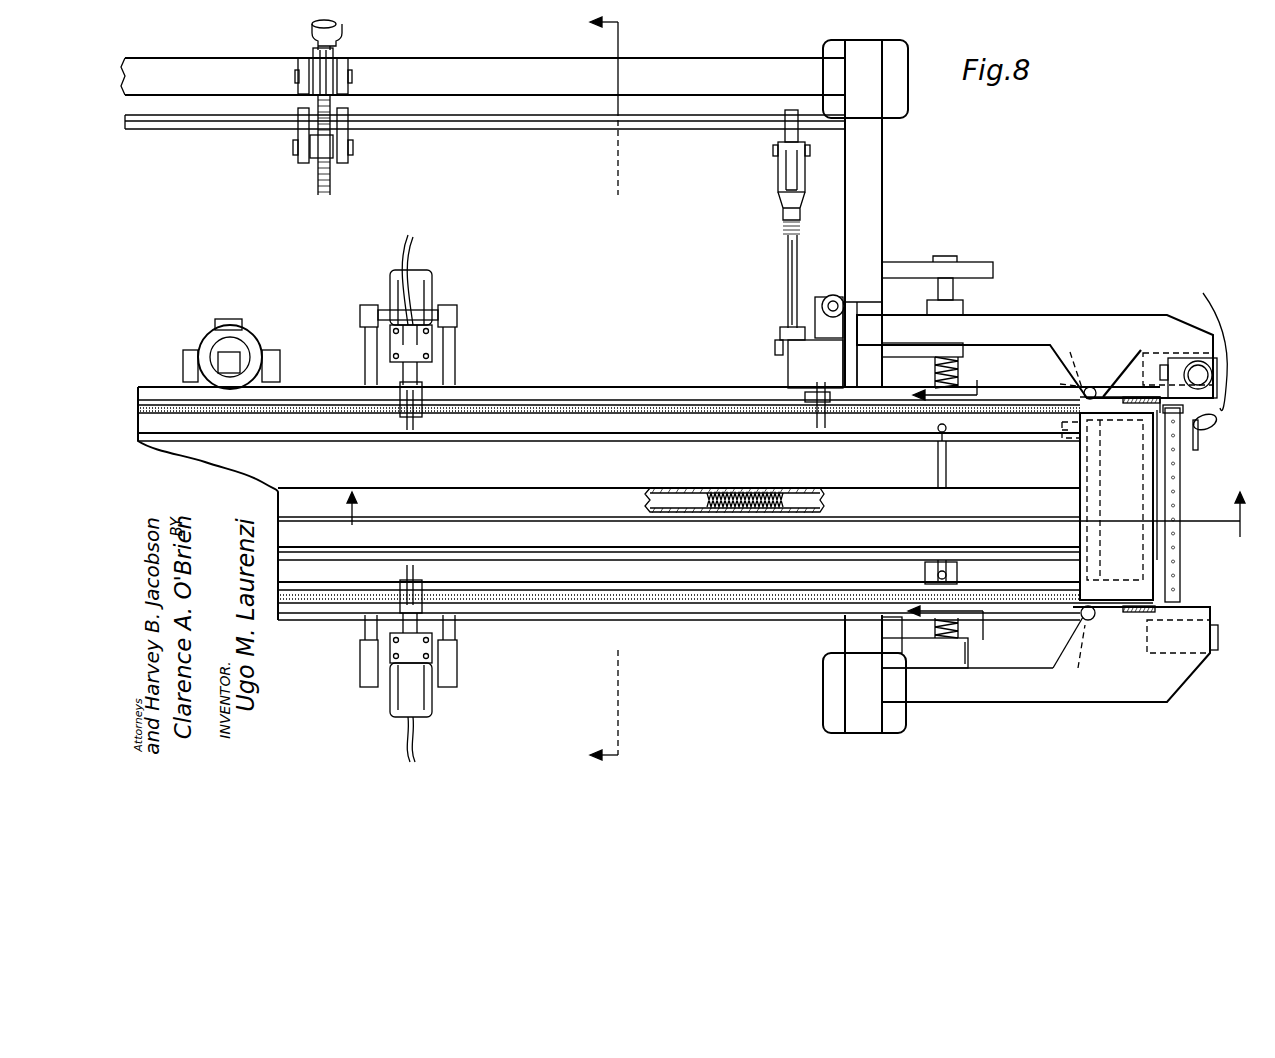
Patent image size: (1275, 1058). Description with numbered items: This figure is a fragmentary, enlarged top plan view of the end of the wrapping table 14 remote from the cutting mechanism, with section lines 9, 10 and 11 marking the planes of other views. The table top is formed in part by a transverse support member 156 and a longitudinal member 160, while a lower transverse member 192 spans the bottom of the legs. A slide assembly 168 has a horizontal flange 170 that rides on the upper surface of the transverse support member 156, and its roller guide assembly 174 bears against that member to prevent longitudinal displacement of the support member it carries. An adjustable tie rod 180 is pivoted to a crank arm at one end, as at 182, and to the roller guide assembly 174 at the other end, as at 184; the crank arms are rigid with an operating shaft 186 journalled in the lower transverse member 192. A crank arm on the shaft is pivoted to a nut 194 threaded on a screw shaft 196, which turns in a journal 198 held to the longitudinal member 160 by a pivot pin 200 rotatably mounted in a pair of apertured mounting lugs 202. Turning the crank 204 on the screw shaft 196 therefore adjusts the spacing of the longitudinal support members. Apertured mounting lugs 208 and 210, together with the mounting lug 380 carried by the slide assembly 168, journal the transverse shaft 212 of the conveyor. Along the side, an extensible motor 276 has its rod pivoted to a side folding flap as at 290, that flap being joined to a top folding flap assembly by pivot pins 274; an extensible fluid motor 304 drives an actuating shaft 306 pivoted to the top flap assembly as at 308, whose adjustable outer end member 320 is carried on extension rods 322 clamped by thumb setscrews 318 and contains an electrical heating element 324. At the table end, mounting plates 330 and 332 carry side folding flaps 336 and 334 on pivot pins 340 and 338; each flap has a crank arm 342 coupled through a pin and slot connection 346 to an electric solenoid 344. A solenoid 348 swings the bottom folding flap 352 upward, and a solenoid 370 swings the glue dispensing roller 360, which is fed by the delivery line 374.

The section line 9- 9 is at (622, 389).
The section line 10- 10 is at (954, 514).
The section line 11- 11 is at (796, 525).
The wrapping table 14 is at (622, 385).
The transverse support member 156 is at (874, 190).
The longitudinal member 160 is at (497, 50).
The slide assembly 168 is at (779, 375).
The horizontal flange 170 is at (867, 312).
The roller guide assembly 174 is at (821, 282).
The adjustable tie rod 180 is at (786, 258).
The pivot connection 182 is at (773, 150).
The pivot connection 184 is at (776, 345).
The operating shaft 186 is at (722, 128).
The lower transverse member 192 is at (340, 160).
The nut 194 is at (318, 158).
The screw shaft 196 is at (326, 182).
The journal 198 is at (332, 72).
The pivot pin 200 is at (350, 77).
The apertured mounting lug 202 is at (300, 80).
The crank 204 is at (335, 46).
The apertured mounting lug 208 is at (908, 268).
The apertured mounting lug 210 is at (935, 652).
The transverse shaft 212 is at (954, 288).
The pivot pin 274 is at (827, 400).
The extensible motor 276 is at (250, 338).
The pivot connection 290 is at (220, 355).
The extensible fluid motor 304 is at (447, 281).
The actuating shaft 306 is at (418, 372).
The pivot connection 308 is at (423, 411).
The thumb setscrew 318 is at (933, 580).
The adjustable outer end member 320 is at (525, 490).
The extension rod 322 is at (948, 480).
The electrical heating element 324 is at (751, 488).
The mounting plate 330 is at (1110, 693).
The mounting plate 332 is at (1070, 325).
The side folding flap 334 is at (1129, 364).
The side folding flap 336 is at (1124, 613).
The pivot pin 338 is at (1091, 387).
The pivot pin 340 is at (1076, 621).
The crank arm 342 is at (1057, 530).
The electric solenoid 344 is at (1160, 350).
The pin and slot connection 346 is at (1057, 655).
The solenoid 348 is at (1195, 450).
The bottom folding flap 352 is at (1155, 573).
The glue dispensing roller 360 is at (1183, 500).
The solenoid 370 is at (1197, 365).
The delivery line 374 is at (1208, 428).
The mounting lug 380 is at (912, 347).